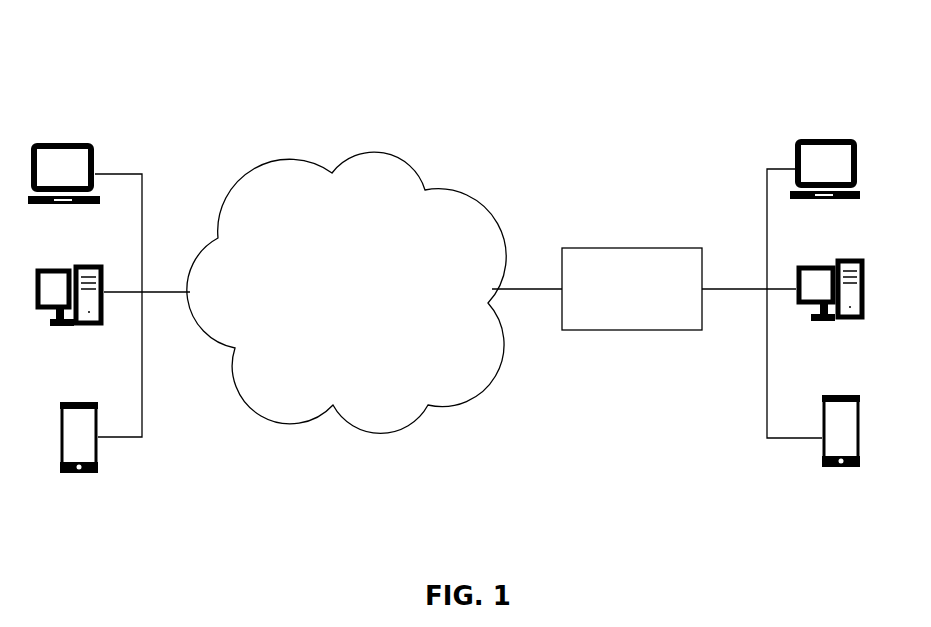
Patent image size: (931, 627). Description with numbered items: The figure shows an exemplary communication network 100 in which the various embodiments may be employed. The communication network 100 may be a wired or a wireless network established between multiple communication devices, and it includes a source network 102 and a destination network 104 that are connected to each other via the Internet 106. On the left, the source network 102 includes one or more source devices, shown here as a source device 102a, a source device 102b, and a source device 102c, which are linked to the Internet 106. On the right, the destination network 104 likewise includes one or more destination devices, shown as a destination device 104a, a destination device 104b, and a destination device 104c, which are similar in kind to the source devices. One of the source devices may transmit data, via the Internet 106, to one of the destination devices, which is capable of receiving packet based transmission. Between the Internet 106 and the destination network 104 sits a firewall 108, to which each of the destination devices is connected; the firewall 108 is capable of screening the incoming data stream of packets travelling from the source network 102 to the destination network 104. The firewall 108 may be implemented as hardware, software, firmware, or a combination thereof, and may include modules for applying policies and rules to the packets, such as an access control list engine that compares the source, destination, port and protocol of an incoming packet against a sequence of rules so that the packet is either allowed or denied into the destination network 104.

The communication network 100 is at (338, 59).
The source network 102 is at (103, 141).
The source device 102a is at (100, 204).
The source device 102b is at (40, 316).
The source device 102c is at (64, 474).
The destination network 104 is at (808, 108).
The destination device 104a is at (862, 197).
The destination device 104b is at (866, 290).
The destination device 104c is at (823, 466).
The Internet 106 is at (346, 292).
The firewall 108 is at (632, 289).